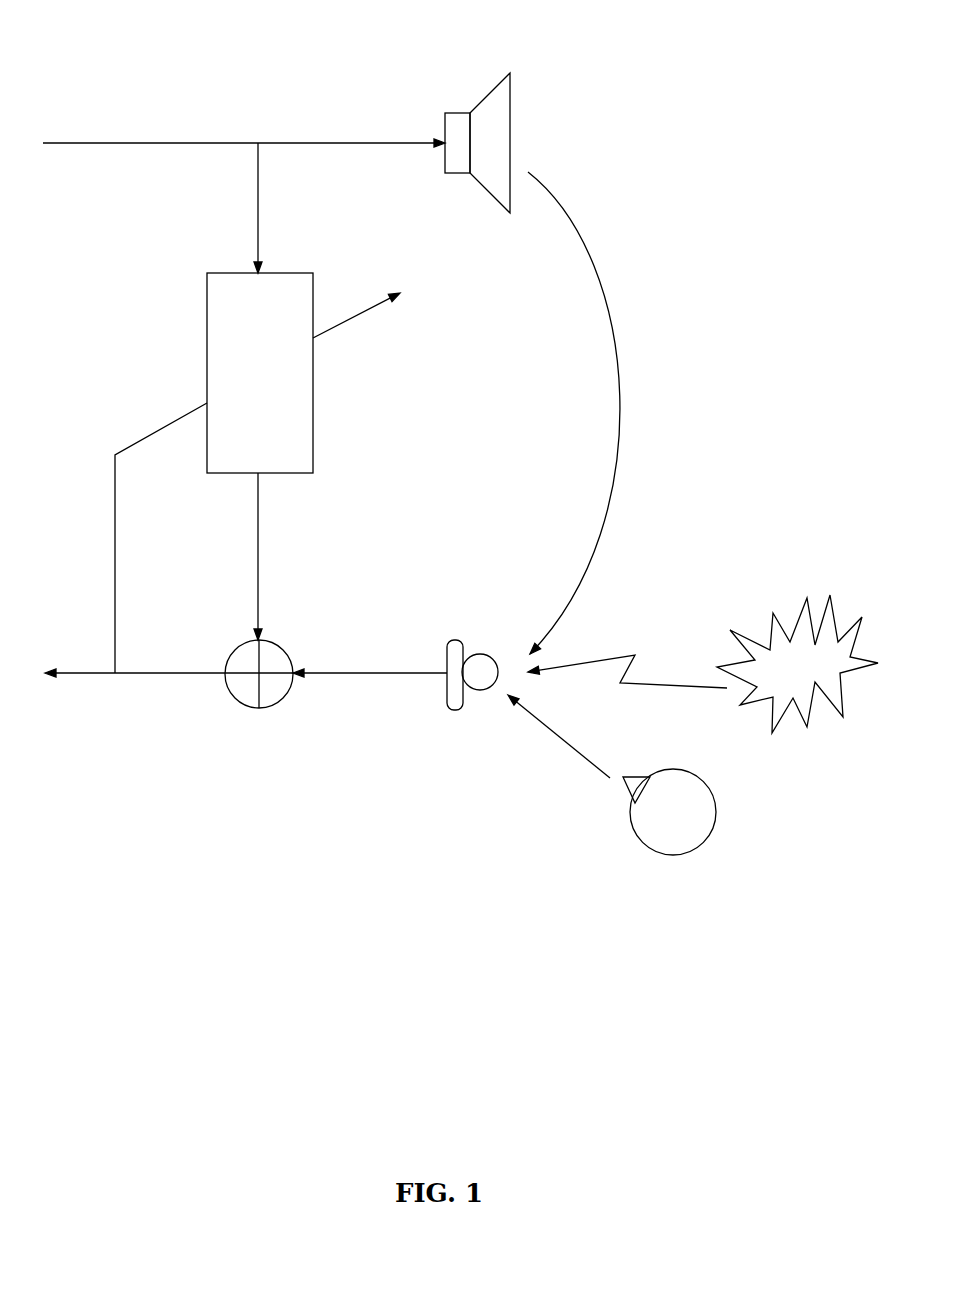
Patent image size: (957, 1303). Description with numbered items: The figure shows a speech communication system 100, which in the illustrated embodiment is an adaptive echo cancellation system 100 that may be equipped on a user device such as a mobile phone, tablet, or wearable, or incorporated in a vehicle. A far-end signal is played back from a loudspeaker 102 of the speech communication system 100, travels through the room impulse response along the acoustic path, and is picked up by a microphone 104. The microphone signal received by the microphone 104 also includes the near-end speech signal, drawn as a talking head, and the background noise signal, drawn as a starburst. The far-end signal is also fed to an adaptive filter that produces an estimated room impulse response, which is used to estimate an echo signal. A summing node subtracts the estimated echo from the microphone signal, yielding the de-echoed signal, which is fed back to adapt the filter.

The speech communication system 100 is at (452, 24).
The loudspeaker 102 is at (508, 120).
The microphone 104 is at (448, 690).